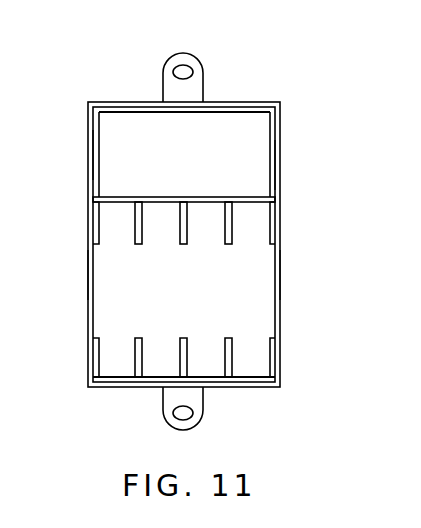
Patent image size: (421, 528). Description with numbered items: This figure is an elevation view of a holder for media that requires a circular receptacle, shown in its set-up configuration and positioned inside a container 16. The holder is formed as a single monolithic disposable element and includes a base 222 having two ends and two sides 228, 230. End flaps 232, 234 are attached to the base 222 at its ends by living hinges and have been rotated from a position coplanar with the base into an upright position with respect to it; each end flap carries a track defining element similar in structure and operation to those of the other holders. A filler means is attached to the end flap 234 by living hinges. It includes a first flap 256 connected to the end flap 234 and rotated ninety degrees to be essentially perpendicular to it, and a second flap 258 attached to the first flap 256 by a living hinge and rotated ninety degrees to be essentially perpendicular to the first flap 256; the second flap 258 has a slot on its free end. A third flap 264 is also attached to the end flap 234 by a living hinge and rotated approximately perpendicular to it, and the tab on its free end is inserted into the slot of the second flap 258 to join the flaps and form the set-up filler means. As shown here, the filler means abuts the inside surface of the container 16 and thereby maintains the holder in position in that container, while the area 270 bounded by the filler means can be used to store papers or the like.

The container 16 is at (282, 130).
The base 222 is at (210, 301).
The side 228 is at (95, 283).
The side 230 is at (273, 272).
The end flap 232 is at (256, 376).
The end flap 234 is at (258, 206).
The first flap 256 is at (96, 146).
The second flap 258 is at (118, 112).
The third flap 264 is at (270, 162).
The area 270 is at (235, 122).